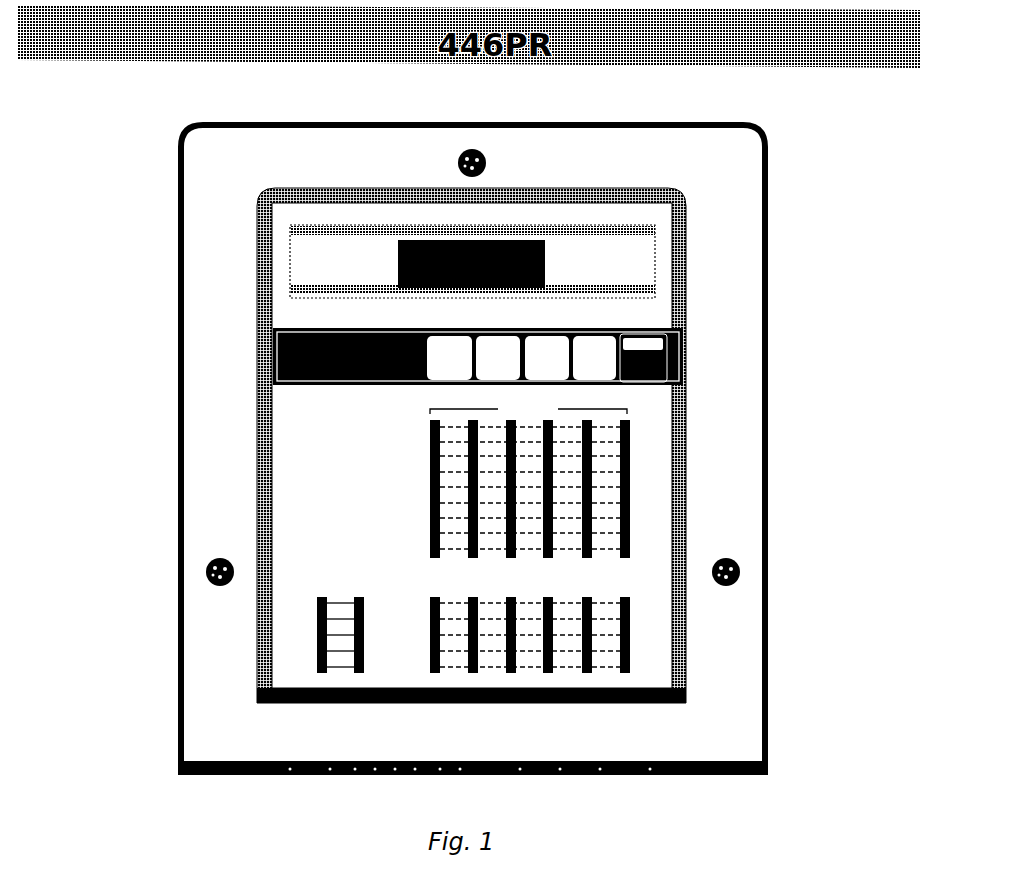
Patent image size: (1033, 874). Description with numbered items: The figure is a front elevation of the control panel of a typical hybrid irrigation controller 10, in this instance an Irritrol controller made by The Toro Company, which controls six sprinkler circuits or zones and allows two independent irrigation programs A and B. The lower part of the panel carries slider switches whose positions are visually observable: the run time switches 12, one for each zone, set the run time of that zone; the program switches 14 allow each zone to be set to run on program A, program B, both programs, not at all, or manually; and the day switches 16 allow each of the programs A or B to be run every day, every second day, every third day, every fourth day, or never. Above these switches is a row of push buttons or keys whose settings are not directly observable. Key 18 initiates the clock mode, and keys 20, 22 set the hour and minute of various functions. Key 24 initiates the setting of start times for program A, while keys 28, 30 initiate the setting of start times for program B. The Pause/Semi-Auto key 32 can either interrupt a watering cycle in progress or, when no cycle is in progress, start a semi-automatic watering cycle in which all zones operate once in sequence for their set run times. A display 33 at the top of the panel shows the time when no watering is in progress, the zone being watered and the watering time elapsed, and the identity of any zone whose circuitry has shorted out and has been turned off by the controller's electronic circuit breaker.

The controller 10 is at (428, 450).
The run time switches 12 is at (658, 485).
The program switches 14 is at (658, 622).
The day switches 16 is at (890, 700).
The key 18 is at (890, 131).
The key 20 is at (890, 166).
The key 22 is at (890, 213).
The key 24 is at (443, 368).
The key 28 is at (481, 336).
The key 30 is at (600, 376).
The Pause/Semi-Auto key 32 is at (702, 357).
The display 33 is at (566, 273).